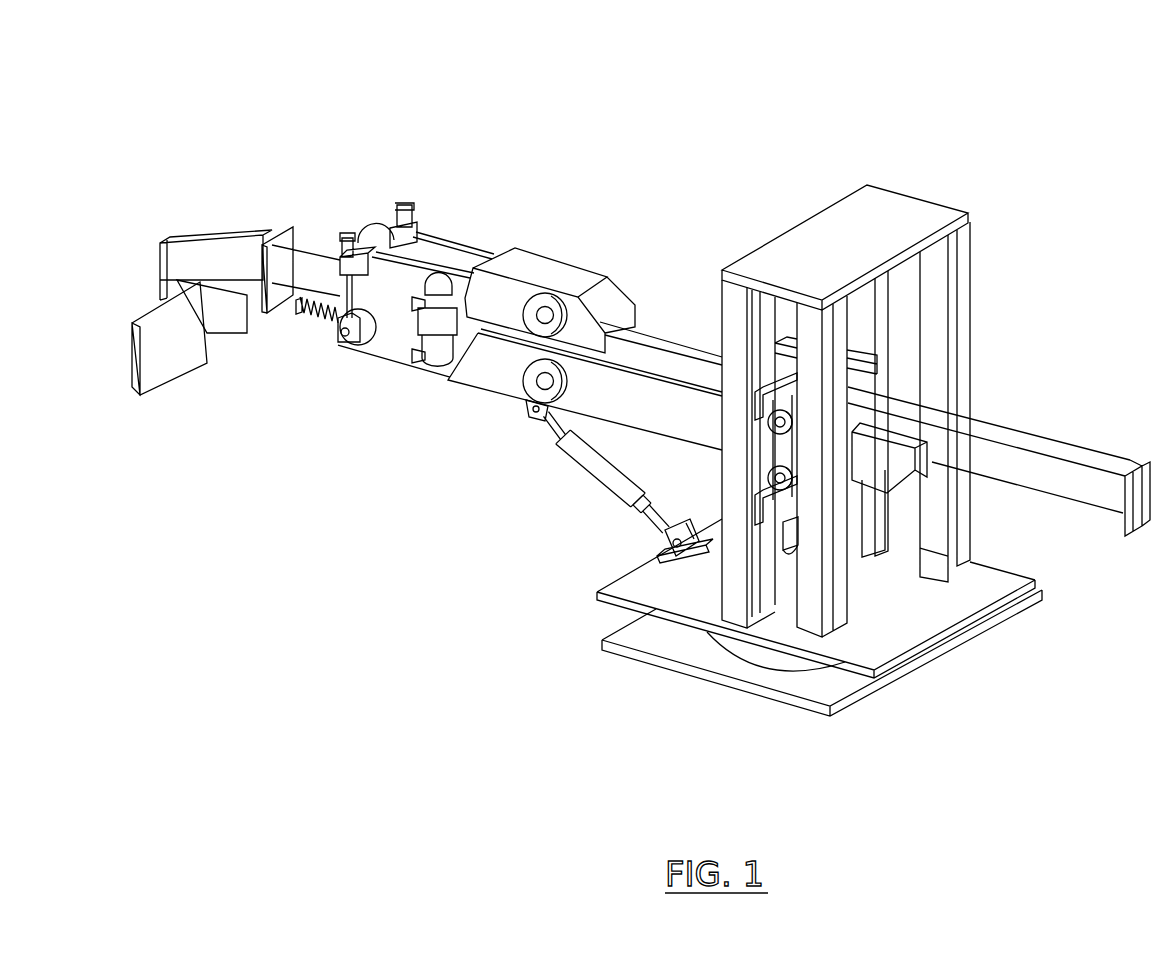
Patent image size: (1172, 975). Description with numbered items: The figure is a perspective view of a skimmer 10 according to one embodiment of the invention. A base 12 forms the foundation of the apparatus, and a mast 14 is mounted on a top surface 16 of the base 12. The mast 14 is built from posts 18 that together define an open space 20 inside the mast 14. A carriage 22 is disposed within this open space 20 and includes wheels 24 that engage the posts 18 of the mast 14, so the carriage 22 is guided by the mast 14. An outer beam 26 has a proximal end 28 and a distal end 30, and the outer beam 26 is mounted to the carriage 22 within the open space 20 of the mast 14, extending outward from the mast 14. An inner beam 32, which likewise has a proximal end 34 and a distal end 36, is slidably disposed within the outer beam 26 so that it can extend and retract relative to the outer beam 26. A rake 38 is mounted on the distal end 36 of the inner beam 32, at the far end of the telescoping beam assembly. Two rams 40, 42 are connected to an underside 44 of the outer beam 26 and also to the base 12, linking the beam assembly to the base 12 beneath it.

The skimmer 10 is at (590, 101).
The base 12 is at (648, 668).
The mast 14 is at (840, 196).
The top surface 16 is at (780, 643).
The posts 18 is at (727, 347).
The open space 20 is at (785, 325).
The carriage 22 is at (787, 450).
The wheels 24 is at (760, 400).
The outer beam 26 is at (668, 440).
The proximal end 28 is at (903, 483).
The distal end 30 is at (370, 357).
The inner beam 32 is at (658, 330).
The proximal end 34 is at (1075, 440).
The distal end 36 is at (218, 280).
The rake 38 is at (140, 318).
The ram 40 is at (587, 463).
The ram 42 is at (783, 520).
The underside 44 is at (530, 408).